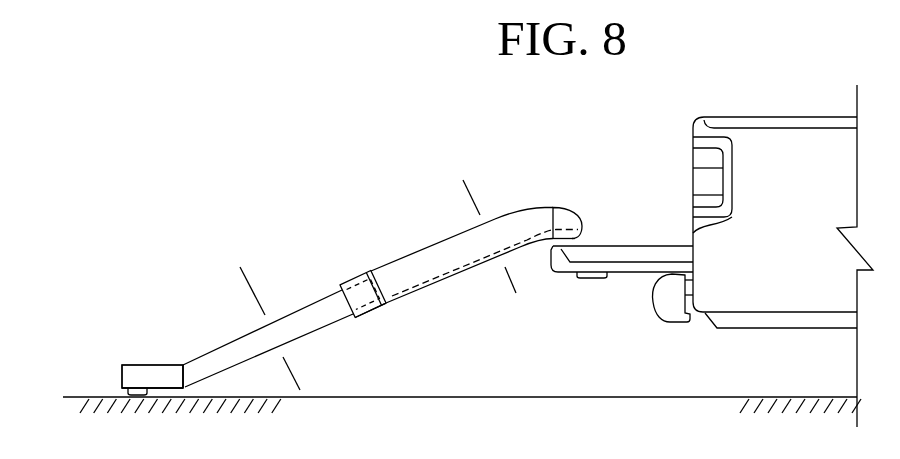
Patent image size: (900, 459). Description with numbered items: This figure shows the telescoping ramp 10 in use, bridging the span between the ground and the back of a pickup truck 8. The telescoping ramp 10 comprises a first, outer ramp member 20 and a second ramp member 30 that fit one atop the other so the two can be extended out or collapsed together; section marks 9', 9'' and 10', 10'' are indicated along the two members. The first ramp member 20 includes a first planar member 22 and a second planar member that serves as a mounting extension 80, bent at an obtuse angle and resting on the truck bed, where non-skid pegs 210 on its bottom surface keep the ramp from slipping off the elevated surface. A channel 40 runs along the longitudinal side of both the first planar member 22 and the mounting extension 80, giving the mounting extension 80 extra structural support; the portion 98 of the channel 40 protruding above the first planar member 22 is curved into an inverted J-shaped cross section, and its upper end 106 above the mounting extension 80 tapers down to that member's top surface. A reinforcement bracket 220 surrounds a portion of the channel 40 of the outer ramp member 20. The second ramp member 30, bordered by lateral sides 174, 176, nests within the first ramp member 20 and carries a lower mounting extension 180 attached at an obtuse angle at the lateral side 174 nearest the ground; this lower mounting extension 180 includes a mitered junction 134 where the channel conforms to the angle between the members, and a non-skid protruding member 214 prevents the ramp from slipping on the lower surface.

The pickup truck 8 is at (718, 117).
The second ramp member 30 is at (122, 353).
The lower mounting extension 180 is at (152, 368).
The mitered junction 134 is at (182, 355).
The non-skid protruding member 214 is at (127, 393).
The lateral side 174 is at (188, 390).
The telescoping ramp 10 is at (321, 338).
The first conduit section 10' is at (230, 294).
The second conduit section 10'' is at (263, 377).
The reinforcement bracket 220 is at (350, 282).
The first planar member 22 is at (392, 296).
The lateral side 176 is at (378, 310).
The first ramp member 20 is at (372, 256).
The curved portion of channel 98 is at (508, 216).
The channel 40 is at (533, 207).
The mounting extension 80 is at (562, 209).
The upper conduit first section 9' is at (451, 199).
The upper conduit second section 9'' is at (485, 285).
The upper end of channel 106 is at (571, 213).
The non-skid peg 210 is at (581, 240).